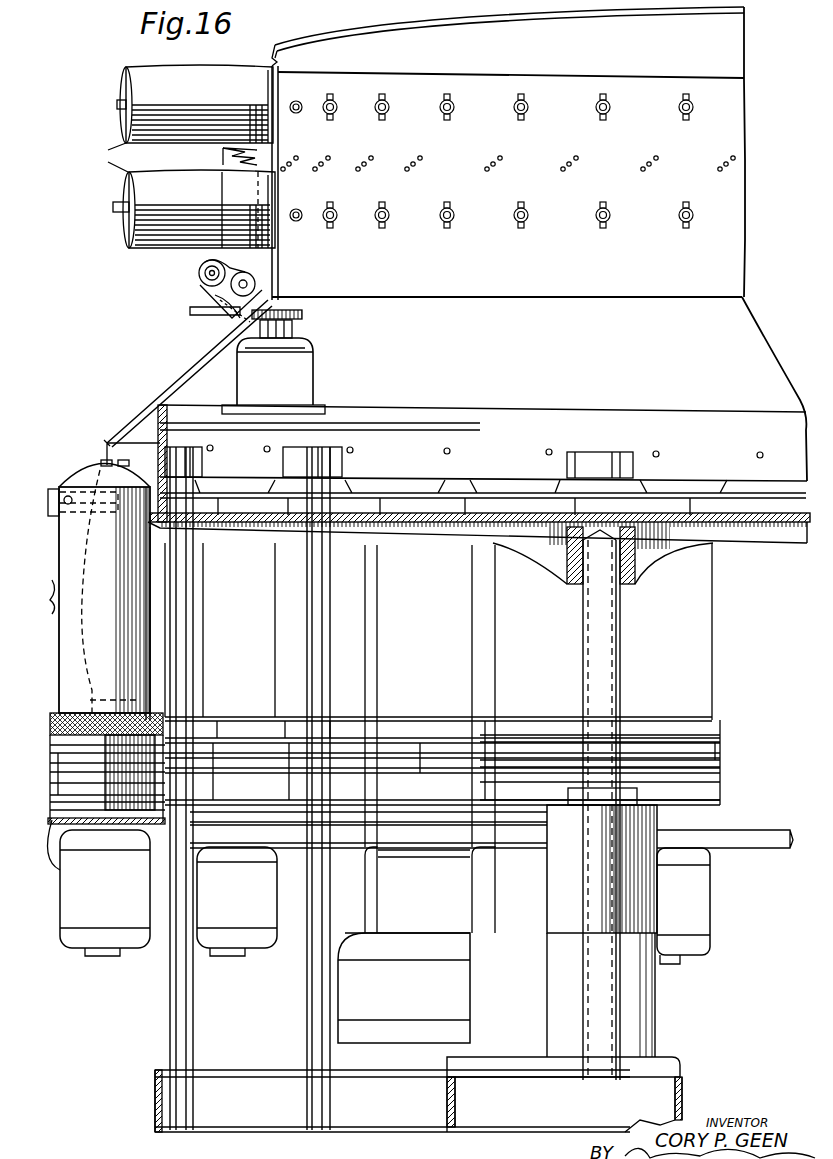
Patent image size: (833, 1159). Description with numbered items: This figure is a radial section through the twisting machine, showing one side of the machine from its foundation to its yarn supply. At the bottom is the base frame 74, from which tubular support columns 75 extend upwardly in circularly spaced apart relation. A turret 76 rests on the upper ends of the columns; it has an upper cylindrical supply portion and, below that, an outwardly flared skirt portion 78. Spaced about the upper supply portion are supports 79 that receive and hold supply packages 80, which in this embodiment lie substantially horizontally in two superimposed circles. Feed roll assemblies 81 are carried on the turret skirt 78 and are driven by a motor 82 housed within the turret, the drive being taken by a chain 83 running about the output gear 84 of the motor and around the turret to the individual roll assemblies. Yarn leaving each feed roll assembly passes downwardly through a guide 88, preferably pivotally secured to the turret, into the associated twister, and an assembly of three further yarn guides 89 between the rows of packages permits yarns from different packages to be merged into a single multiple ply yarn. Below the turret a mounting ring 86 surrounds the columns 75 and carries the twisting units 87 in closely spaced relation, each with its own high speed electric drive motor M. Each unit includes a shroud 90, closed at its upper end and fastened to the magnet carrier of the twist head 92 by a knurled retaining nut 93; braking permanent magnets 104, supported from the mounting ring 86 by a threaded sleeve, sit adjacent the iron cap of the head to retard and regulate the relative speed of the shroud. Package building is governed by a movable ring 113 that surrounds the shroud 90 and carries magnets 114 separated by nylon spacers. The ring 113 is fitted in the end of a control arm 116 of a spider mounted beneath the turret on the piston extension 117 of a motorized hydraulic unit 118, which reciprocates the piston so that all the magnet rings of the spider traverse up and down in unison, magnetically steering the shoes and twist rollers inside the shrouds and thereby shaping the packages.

The base frame 74 is at (155, 1090).
The tubular support columns 75 is at (305, 1012).
The turret 76 is at (462, 12).
The skirt portion 78 is at (190, 378).
The supports 79 is at (117, 104).
The supply packages 80 is at (103, 157).
The feed roll assemblies 81 is at (190, 288).
The motor 82 is at (315, 382).
The chain 83 is at (296, 320).
The output gear 84 is at (290, 310).
The mounting ring 86 is at (99, 888).
The twisting units 87 is at (101, 460).
The guide 88 is at (130, 440).
The yarn guide assembly 89 is at (215, 161).
The shroud 90 is at (712, 682).
The twist head 92 is at (45, 597).
The knurled retaining nut 93 is at (736, 711).
The braking permanent magnets 104 is at (718, 792).
The movable ring 113 is at (62, 525).
The magnets 114 is at (62, 490).
The control arm 116 is at (662, 572).
The piston extension 117 is at (622, 672).
The motorized hydraulic unit 118 is at (655, 1003).
The high speed electric drive motor M is at (102, 958).